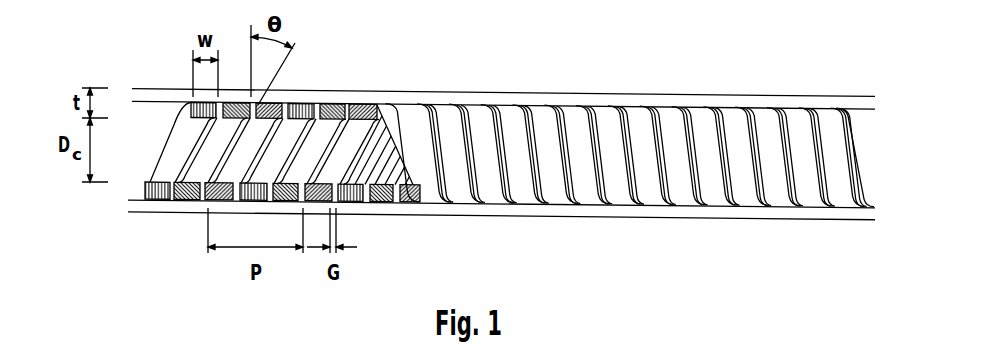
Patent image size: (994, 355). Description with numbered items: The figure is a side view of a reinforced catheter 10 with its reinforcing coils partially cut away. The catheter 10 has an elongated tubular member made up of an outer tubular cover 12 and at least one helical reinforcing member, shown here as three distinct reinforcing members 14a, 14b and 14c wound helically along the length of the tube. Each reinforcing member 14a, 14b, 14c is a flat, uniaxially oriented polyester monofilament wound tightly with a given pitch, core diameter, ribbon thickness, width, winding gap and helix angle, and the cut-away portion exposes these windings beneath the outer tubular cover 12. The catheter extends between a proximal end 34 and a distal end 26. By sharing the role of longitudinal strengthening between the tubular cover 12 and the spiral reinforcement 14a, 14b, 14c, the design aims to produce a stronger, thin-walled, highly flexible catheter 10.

The reinforced catheter 10 is at (472, 65).
The outer tubular cover 12 is at (638, 98).
The first helical reinforcing member 14a is at (512, 112).
The second helical reinforcing member 14b is at (543, 115).
The third helical reinforcing member 14c is at (573, 115).
The distal end 26 is at (872, 102).
The proximal end 34 is at (132, 98).